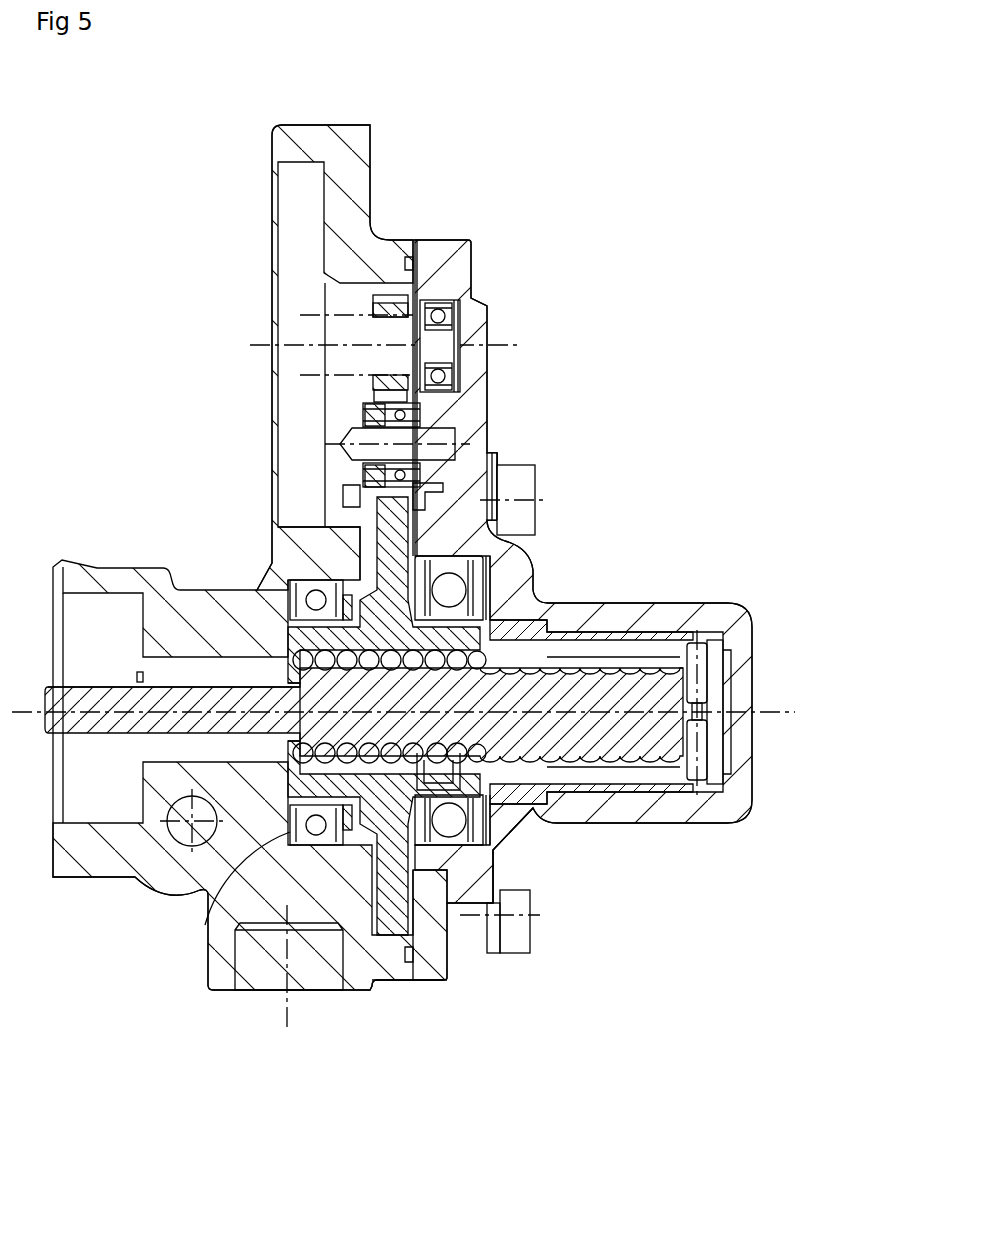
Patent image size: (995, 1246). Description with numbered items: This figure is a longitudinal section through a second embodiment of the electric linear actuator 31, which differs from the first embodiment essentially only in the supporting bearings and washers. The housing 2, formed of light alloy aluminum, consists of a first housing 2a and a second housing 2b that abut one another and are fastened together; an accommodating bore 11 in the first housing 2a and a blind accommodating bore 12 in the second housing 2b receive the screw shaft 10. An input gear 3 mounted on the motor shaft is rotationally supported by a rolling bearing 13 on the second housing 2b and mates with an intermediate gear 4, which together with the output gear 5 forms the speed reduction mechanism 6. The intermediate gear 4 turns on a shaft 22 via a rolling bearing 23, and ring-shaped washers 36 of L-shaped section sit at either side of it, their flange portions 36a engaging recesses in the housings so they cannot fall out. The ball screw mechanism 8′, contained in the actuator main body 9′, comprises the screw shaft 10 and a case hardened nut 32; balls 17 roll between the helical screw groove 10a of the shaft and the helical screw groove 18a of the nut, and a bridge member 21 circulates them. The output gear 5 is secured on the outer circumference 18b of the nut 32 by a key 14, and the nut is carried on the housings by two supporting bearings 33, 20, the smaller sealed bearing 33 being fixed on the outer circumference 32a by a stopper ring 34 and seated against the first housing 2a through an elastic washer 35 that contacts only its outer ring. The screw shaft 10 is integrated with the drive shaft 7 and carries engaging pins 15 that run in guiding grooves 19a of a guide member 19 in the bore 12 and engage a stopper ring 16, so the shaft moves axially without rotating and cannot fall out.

The housing 2 is at (445, 1073).
The first housing 2a is at (382, 963).
The second housing 2b is at (436, 963).
The input gear 3 is at (387, 298).
The intermediate gear 4 is at (490, 458).
The output gear 5 is at (510, 513).
The speed reduction mechanism 6 is at (603, 437).
The drive shaft 7 is at (197, 703).
The ball screw mechanism 8′ is at (533, 837).
The actuator main body 9′ is at (643, 575).
The screw shaft 10 is at (657, 760).
The helical screw groove 10a is at (620, 770).
The accommodating bore 11 is at (143, 677).
The accommodating bore 12 is at (690, 643).
The rolling bearing 13 is at (453, 312).
The key 14 is at (345, 847).
The engaging pin 15 is at (720, 640).
The stopper ring 16 is at (490, 620).
The ball 17 is at (437, 663).
The helical screw groove 18a is at (402, 767).
The outer circumference 18b is at (383, 620).
The guide member 19 is at (640, 632).
The guiding groove 19a is at (593, 647).
The supporting bearing 20 is at (523, 897).
The bridge member 21 is at (440, 780).
The shaft 22 is at (340, 444).
The rolling bearing 23 is at (327, 413).
The electric linear actuator 31 is at (150, 372).
The nut 32 is at (253, 590).
The outer circumference 32a is at (300, 660).
The supporting bearing 33 is at (210, 925).
The stopper ring 34 is at (333, 580).
The washer 35 is at (270, 550).
The washer 36 is at (327, 470).
The flange portion 36a is at (343, 507).